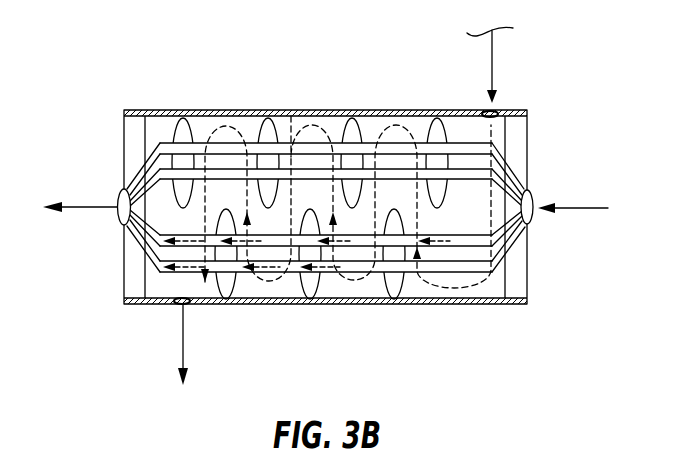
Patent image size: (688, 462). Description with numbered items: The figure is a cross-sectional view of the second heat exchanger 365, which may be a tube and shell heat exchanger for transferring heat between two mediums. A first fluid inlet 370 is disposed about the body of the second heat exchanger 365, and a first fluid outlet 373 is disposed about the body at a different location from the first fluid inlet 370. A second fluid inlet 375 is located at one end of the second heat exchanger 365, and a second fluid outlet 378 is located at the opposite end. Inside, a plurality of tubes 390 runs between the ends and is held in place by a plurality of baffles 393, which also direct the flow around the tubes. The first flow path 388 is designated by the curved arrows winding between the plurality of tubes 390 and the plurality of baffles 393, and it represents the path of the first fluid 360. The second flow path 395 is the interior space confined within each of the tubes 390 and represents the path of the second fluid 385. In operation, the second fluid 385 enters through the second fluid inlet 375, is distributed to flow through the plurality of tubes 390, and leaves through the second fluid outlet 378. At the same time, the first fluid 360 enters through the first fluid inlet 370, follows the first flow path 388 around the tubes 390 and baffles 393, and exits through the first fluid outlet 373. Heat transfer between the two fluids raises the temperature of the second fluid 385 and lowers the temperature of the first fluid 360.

The second heat exchanger 365 is at (124, 42).
The first fluid 360 is at (493, 63).
The first fluid inlet 370 is at (497, 108).
The first fluid outlet 373 is at (178, 304).
The second fluid inlet 375 is at (533, 220).
The second fluid outlet 378 is at (120, 217).
The second fluid 385 is at (576, 203).
The first flow path 388 is at (225, 127).
The plurality of tubes 390 is at (303, 128).
The plurality of baffles 393 is at (173, 128).
The second flow path 395 is at (238, 240).